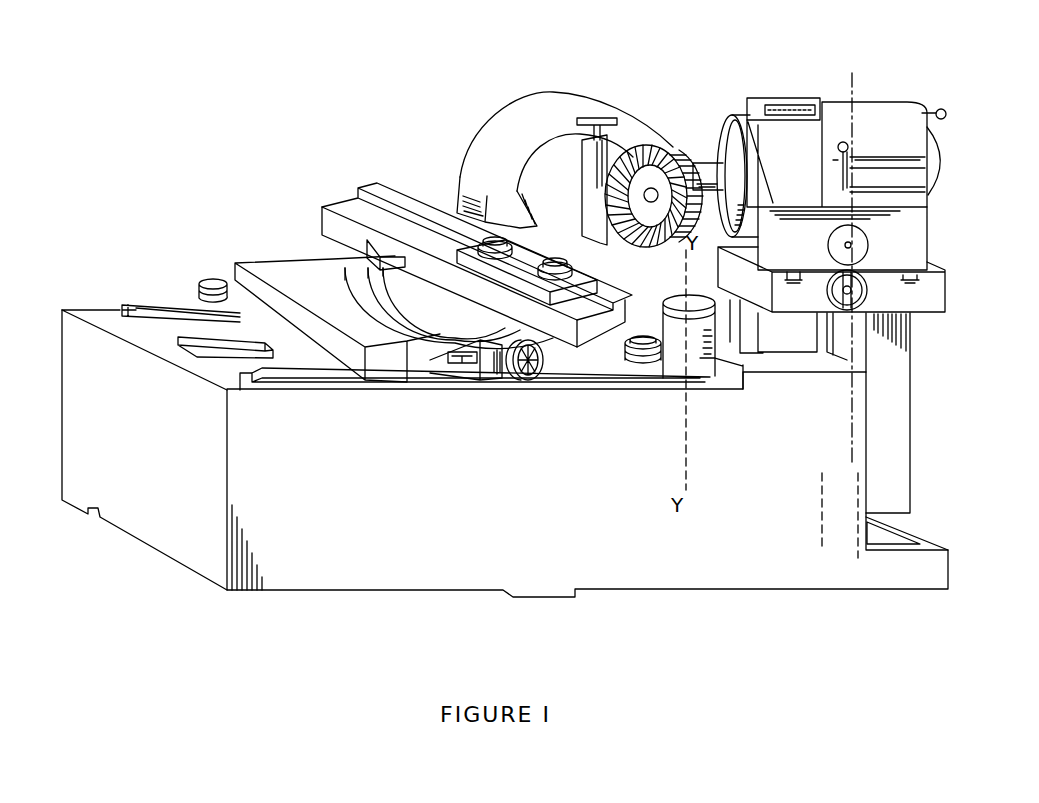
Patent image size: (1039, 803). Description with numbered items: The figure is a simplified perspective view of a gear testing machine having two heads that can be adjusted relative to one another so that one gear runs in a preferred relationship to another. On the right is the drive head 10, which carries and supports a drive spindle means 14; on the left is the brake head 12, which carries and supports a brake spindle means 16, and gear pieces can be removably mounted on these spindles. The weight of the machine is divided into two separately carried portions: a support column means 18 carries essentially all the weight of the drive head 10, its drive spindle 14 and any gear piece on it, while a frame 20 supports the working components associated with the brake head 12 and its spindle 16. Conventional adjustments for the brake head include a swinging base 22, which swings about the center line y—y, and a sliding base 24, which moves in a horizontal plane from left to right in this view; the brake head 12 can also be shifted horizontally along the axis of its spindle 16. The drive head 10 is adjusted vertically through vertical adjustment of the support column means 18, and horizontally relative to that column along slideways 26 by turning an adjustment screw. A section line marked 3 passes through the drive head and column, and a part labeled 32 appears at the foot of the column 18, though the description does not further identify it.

The drive head 10 is at (915, 160).
The brake head 12 is at (552, 197).
The drive spindle means 14 is at (703, 160).
The brake spindle means 16 is at (652, 178).
The support column means 18 is at (888, 412).
The frame 20 is at (390, 572).
The swinging base 22 is at (343, 207).
The sliding base 24 is at (273, 273).
The slideways 26 is at (917, 282).
The gusset 32 is at (866, 517).
The section line 3- 3 is at (822, 447).